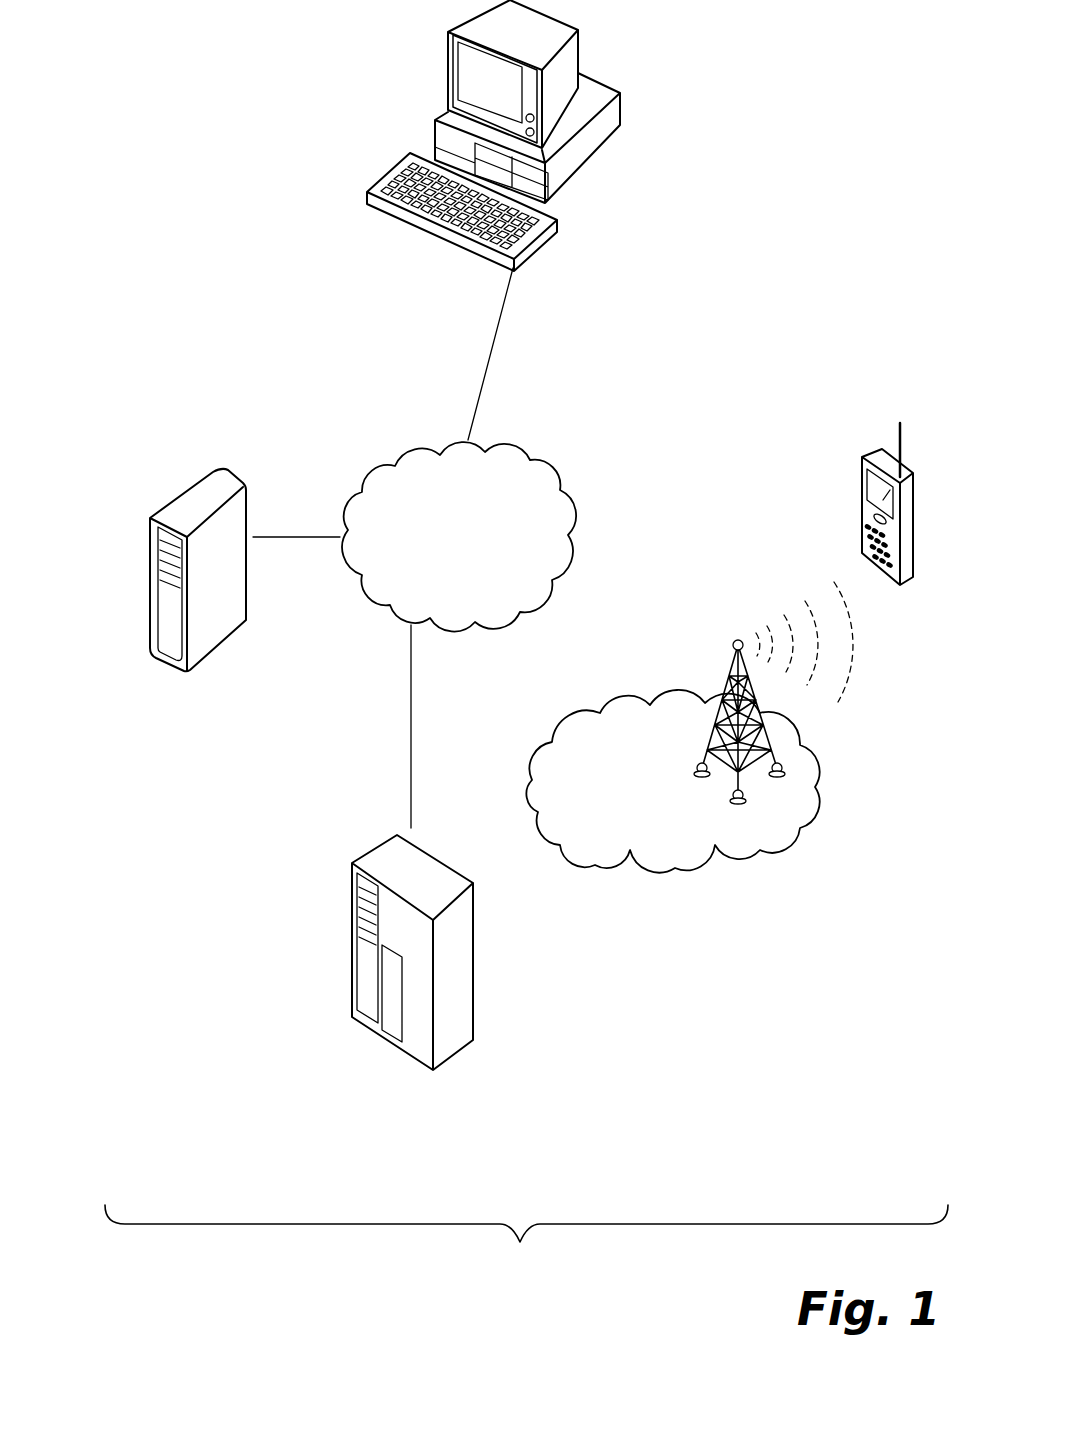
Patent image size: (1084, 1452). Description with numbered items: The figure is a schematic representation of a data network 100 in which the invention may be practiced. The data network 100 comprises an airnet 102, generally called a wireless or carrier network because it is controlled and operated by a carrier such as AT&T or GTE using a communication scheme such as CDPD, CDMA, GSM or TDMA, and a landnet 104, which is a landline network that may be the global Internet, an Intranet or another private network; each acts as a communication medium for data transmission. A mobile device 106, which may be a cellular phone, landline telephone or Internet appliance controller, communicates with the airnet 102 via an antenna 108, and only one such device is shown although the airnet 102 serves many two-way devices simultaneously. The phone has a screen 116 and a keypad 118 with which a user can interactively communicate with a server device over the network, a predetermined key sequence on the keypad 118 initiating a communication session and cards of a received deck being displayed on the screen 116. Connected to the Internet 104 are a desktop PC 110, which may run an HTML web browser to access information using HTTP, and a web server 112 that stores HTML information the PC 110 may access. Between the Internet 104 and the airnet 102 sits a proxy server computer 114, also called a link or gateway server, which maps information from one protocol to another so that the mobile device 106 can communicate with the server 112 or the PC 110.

The data network 100 is at (526, 1240).
The airnet 102 is at (810, 797).
The landnet 104 is at (431, 461).
The mobile device 106 is at (827, 511).
The antenna 108 is at (736, 651).
The desktop PC 110 is at (593, 160).
The web server 112 is at (184, 493).
The proxy server computer 114 is at (350, 960).
The screen 116 is at (920, 478).
The keypad 118 is at (877, 578).